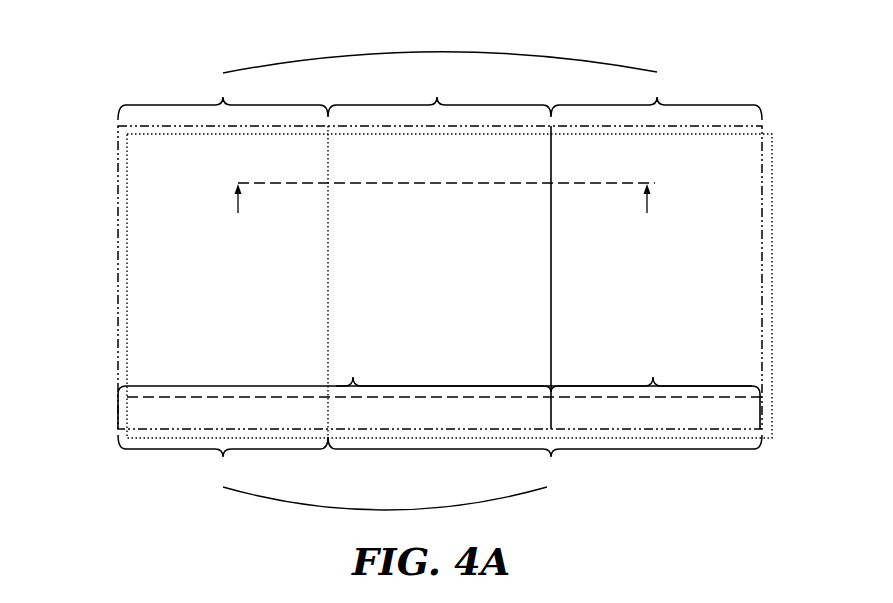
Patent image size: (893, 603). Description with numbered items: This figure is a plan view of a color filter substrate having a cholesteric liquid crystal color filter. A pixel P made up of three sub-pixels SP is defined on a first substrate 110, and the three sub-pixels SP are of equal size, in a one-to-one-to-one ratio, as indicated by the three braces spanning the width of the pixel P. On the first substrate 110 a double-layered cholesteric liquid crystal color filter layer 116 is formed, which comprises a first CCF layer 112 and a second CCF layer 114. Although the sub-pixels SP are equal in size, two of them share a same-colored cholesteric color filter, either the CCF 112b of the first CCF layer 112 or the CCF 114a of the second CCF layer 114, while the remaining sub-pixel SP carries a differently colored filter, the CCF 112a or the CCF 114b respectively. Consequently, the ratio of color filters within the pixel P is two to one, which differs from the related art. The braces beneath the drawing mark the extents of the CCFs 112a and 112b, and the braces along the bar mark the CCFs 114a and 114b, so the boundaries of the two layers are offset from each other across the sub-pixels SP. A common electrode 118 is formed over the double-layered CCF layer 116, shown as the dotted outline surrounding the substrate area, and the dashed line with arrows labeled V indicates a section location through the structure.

The first substrate 110 is at (118, 352).
The first CCF layer 112 is at (385, 509).
The first CCF of first layer 112a is at (223, 459).
The second CCF of first layer 112b is at (545, 459).
The second CCF layer 114 is at (357, 353).
The first CCF of second layer 114a is at (443, 374).
The second CCF of second layer 114b is at (651, 374).
The double-layered cholesteric liquid crystal color filter layer 116 is at (135, 413).
The common electrode 118 is at (772, 346).
The pixel P is at (439, 67).
The sub-pixel SP is at (440, 98).
The section line V is at (444, 207).